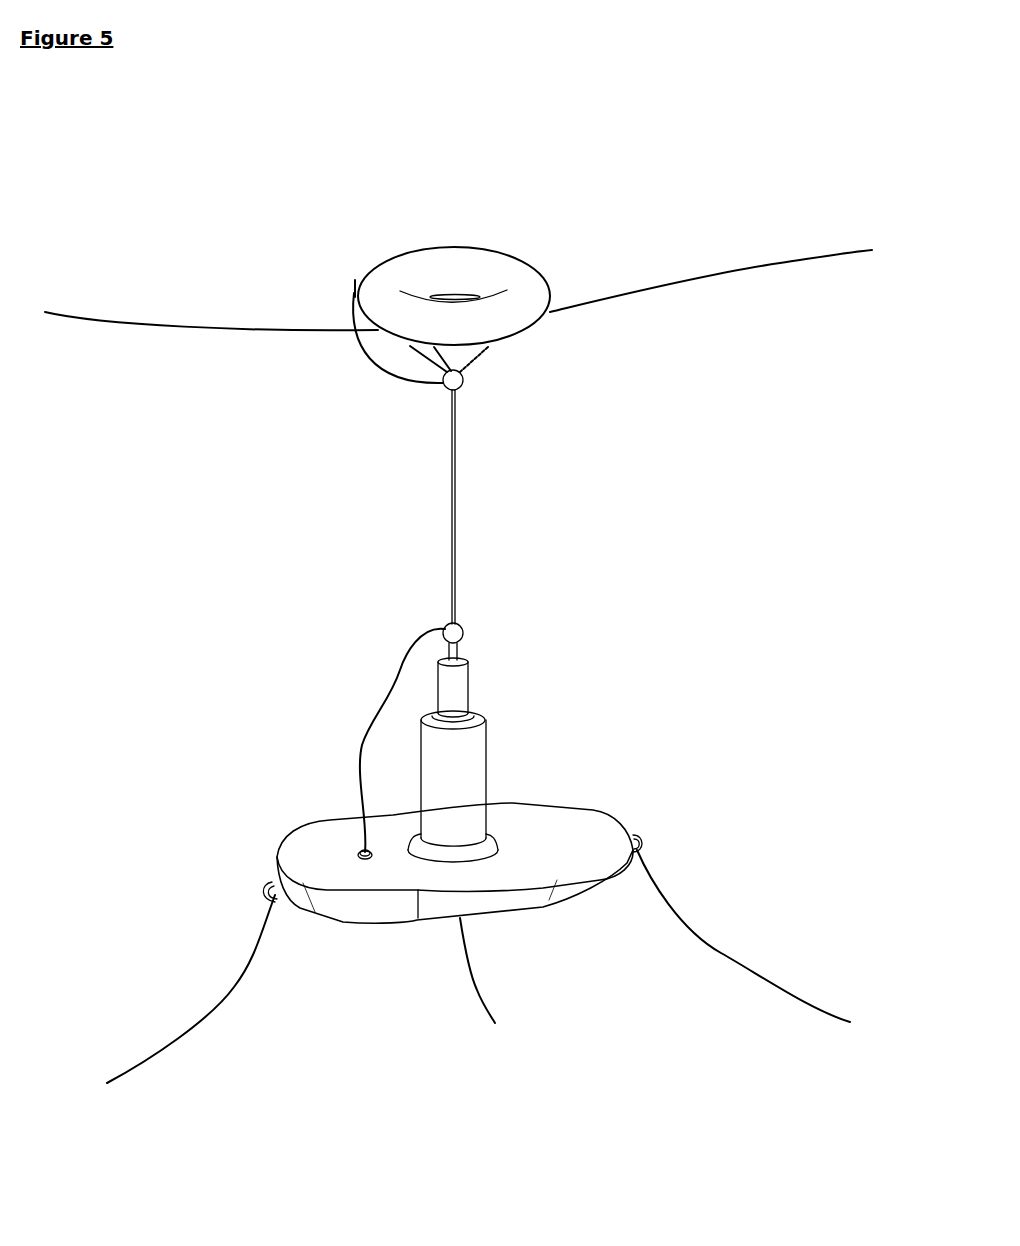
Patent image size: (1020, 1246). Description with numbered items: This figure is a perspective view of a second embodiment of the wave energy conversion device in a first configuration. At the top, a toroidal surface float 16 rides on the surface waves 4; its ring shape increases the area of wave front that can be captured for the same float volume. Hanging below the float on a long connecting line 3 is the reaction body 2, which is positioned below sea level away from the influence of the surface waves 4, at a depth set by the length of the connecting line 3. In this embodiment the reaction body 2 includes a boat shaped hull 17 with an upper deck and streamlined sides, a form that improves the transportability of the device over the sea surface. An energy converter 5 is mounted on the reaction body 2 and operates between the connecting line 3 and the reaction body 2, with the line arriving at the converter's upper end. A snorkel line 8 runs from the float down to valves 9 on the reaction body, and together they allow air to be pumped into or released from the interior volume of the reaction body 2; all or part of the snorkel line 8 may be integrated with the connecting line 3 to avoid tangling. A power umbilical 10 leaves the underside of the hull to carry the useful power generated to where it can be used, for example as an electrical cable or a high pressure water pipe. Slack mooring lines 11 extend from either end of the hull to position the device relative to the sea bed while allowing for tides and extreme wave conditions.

The reaction body 2 is at (582, 778).
The connecting line 3 is at (452, 520).
The surface waves 4 is at (665, 282).
The energy converter 5 is at (453, 692).
The snorkel line 8 is at (375, 367).
The valves 9 is at (355, 293).
The power umbilical 10 is at (477, 990).
The mooring lines 11 is at (234, 987).
The toroidal surface float 16 is at (460, 263).
The boat shaped hull 17 is at (330, 912).